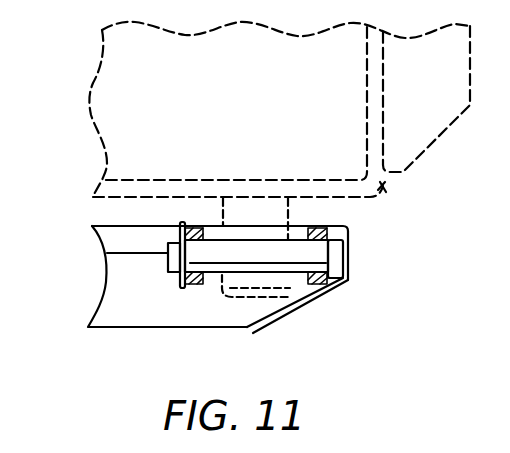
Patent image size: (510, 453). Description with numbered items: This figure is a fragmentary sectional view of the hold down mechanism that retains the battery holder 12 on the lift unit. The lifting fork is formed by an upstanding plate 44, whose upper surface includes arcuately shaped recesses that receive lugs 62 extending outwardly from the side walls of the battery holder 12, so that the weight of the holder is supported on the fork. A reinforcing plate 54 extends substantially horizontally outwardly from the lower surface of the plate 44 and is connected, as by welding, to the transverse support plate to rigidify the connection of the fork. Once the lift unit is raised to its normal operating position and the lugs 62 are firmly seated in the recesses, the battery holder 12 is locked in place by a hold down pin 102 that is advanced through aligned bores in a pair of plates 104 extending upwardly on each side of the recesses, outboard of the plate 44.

The battery holder 12 is at (386, 190).
The lug 62 is at (277, 210).
The upstanding plate 44 is at (92, 226).
The reinforcing plate 54 is at (287, 312).
The hold down pin 102 is at (168, 258).
The plate 104 is at (192, 284).